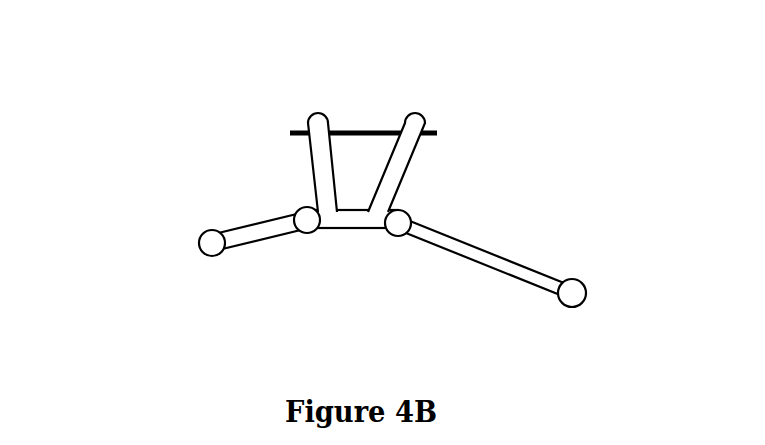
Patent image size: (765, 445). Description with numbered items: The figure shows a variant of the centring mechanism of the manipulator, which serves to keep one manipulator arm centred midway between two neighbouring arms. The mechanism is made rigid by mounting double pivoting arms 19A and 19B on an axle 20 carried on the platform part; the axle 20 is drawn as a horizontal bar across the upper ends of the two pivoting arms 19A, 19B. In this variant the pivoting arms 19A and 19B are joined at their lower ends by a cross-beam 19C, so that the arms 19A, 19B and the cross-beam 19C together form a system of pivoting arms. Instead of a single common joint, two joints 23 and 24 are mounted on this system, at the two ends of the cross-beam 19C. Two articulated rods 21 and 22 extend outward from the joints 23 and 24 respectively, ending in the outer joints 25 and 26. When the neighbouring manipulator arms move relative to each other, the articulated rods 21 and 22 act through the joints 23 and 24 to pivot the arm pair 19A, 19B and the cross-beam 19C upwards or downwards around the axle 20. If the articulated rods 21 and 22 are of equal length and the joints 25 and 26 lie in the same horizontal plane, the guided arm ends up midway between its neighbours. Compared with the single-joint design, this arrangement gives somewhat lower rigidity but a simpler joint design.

The pivoting arm 19A is at (320, 173).
The pivoting arm 19B is at (393, 180).
The cross-beam 19C is at (355, 227).
The axle 20 is at (363, 130).
The articulated rod 21 is at (492, 260).
The articulated rod 22 is at (257, 232).
The joint 23 is at (398, 225).
The joint 24 is at (307, 223).
The joint 25 is at (575, 287).
The joint 26 is at (207, 240).